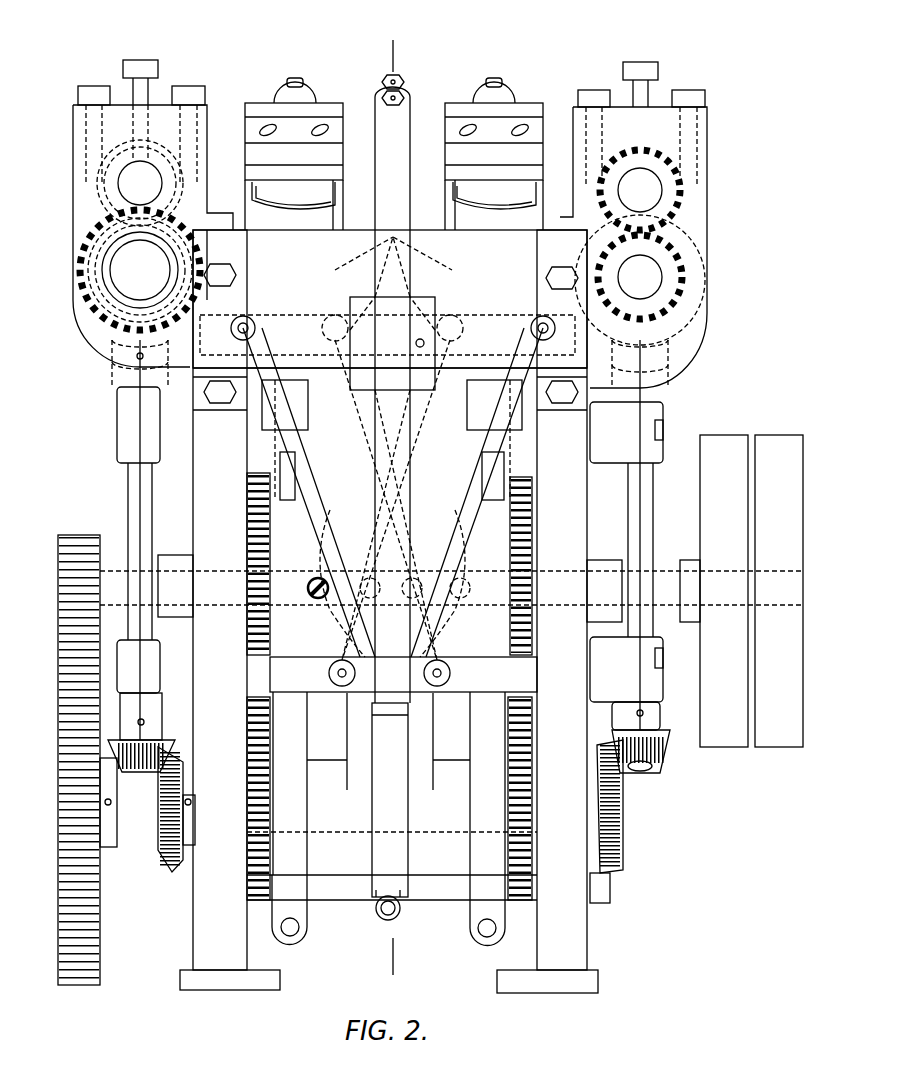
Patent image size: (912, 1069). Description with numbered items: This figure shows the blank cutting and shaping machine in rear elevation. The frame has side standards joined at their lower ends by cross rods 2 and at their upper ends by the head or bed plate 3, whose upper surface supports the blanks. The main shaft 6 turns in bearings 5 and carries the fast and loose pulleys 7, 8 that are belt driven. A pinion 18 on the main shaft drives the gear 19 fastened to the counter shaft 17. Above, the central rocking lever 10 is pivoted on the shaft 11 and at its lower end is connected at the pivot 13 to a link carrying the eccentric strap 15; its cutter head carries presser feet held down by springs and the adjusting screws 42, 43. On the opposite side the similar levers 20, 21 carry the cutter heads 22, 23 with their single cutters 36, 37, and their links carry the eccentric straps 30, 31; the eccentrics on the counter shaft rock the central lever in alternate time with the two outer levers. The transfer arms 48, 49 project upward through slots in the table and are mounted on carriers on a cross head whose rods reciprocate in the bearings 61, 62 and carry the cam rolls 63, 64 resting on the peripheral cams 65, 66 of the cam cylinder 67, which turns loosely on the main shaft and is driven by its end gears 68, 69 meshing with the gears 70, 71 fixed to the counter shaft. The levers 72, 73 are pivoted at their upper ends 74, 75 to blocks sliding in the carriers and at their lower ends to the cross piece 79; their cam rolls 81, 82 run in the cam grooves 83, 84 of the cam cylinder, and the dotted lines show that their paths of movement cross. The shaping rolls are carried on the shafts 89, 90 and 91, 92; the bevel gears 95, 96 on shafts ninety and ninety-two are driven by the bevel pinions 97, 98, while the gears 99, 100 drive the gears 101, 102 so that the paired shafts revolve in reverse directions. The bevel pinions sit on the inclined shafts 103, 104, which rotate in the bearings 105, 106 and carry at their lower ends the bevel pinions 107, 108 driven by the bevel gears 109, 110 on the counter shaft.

The cross rods 2 is at (452, 898).
The head or bed plate 3 is at (390, 507).
The bearings 5 is at (172, 572).
The main shaft 6 is at (665, 588).
The fast pulley 7 is at (724, 591).
The loose pulley 8 is at (779, 591).
The rocking lever 10 is at (393, 389).
The shaft 11 is at (480, 310).
The pivotal connection 13 is at (415, 790).
The eccentric strap 15 is at (375, 908).
The counter shaft 17 is at (147, 802).
The pinion 18 is at (90, 535).
The gear 19 is at (100, 985).
The lever 20 is at (250, 108).
The lever 21 is at (538, 108).
The cutter head 22 is at (291, 155).
The cutter head 23 is at (491, 155).
The eccentric strap 30 is at (296, 935).
The eccentric strap 31 is at (478, 935).
The cutter 36 is at (293, 195).
The cutter 37 is at (494, 195).
The adjusting screw 42 is at (404, 82).
The adjusting screw 43 is at (404, 98).
The arm 48 is at (360, 253).
The arm 49 is at (425, 253).
The bearing 61 is at (308, 425).
The bearing 62 is at (467, 400).
The cam roll 63 is at (295, 470).
The cam roll 64 is at (480, 470).
The peripheral cam 65 is at (295, 505).
The peripheral cam 66 is at (532, 500).
The cam cylinder 67 is at (282, 620).
The gear 68 is at (245, 485).
The gear 69 is at (532, 478).
The gear 70 is at (245, 752).
The gear 71 is at (525, 752).
The lever 72 is at (492, 345).
The lever 73 is at (300, 340).
The upper end pivot 74 is at (248, 325).
The upper end pivot 75 is at (536, 322).
The cross piece 79 is at (270, 660).
The cam roll 81 is at (306, 588).
The cam roll 82 is at (470, 592).
The cam groove 83 is at (350, 498).
The cam groove 84 is at (447, 515).
The shaft 89 is at (140, 183).
The shaft 90 is at (140, 270).
The shaft 91 is at (640, 190).
The shaft 92 is at (640, 277).
The bevel gear 95 is at (80, 278).
The bevel gear 96 is at (700, 230).
The bevel pinion 97 is at (105, 345).
The bevel pinion 98 is at (680, 318).
The gear 99 is at (78, 237).
The gear 100 is at (682, 281).
The gear 101 is at (100, 165).
The gear 102 is at (672, 198).
The shaft 103 is at (128, 488).
The shaft 104 is at (645, 500).
The bearing 105 is at (150, 523).
The bearing 106 is at (626, 552).
The bevel pinion 107 is at (170, 745).
The bevel pinion 108 is at (678, 725).
The bevel gear 109 is at (158, 860).
The bevel gear 110 is at (618, 865).